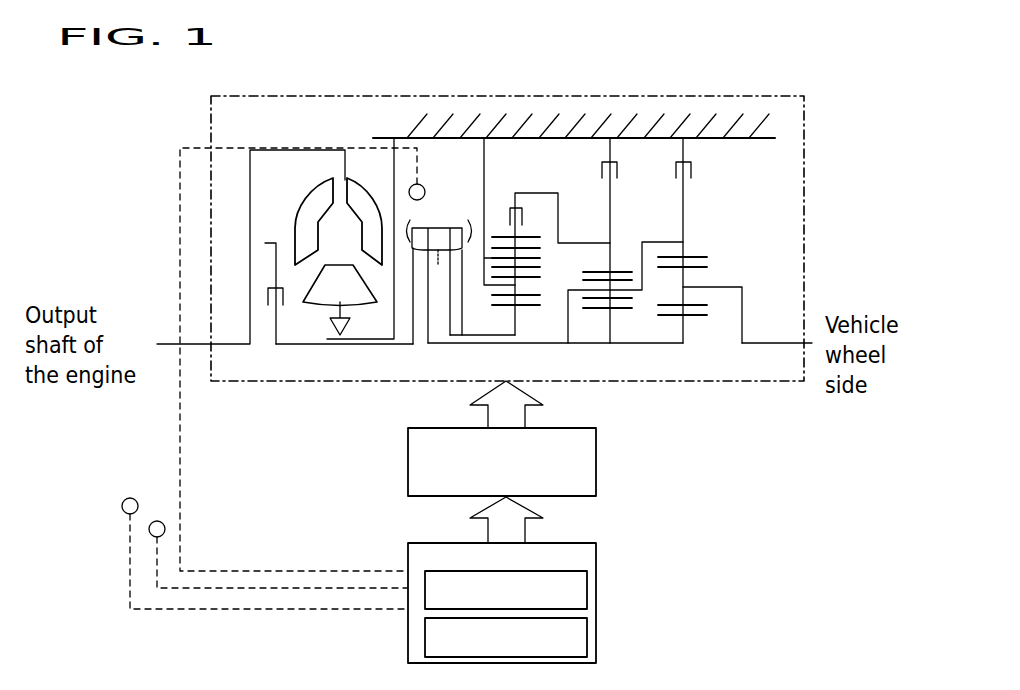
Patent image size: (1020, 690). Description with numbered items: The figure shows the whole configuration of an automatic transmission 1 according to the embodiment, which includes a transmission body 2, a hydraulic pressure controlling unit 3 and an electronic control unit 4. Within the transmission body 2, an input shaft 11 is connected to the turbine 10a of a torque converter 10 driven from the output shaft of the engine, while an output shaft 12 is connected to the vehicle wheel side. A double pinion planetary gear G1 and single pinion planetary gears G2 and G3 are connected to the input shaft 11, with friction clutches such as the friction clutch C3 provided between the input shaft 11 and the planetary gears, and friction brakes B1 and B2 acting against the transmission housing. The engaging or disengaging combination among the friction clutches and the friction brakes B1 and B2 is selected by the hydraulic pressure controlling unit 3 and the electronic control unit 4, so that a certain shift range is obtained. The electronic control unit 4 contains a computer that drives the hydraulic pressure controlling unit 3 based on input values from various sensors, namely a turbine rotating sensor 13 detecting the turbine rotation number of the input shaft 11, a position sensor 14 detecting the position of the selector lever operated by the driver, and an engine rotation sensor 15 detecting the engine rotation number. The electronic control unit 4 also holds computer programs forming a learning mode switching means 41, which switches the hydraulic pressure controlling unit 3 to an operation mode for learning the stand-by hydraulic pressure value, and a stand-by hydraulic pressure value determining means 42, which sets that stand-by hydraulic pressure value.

The automatic transmission 1 is at (824, 100).
The transmission body 2 is at (795, 171).
The hydraulic pressure controlling unit 3 is at (590, 447).
The electronic control unit 4 is at (540, 580).
The learning mode switching means 41 is at (578, 582).
The stand-by hydraulic pressure value determining means 42 is at (578, 628).
The torque converter 10 is at (322, 208).
The turbine 10a is at (308, 190).
The input shaft 11 is at (302, 345).
The output shaft 12 is at (750, 337).
The turbine rotating sensor 13 is at (424, 189).
The position sensor 14 is at (167, 530).
The engine rotation sensor 15 is at (138, 503).
The friction brake B1 is at (617, 172).
The friction brake B2 is at (691, 172).
The friction clutch C3 is at (522, 222).
The double pinion planetary gear G1 is at (553, 272).
The single pinion planetary gear G2 is at (633, 241).
The single pinion planetary gear G3 is at (716, 240).